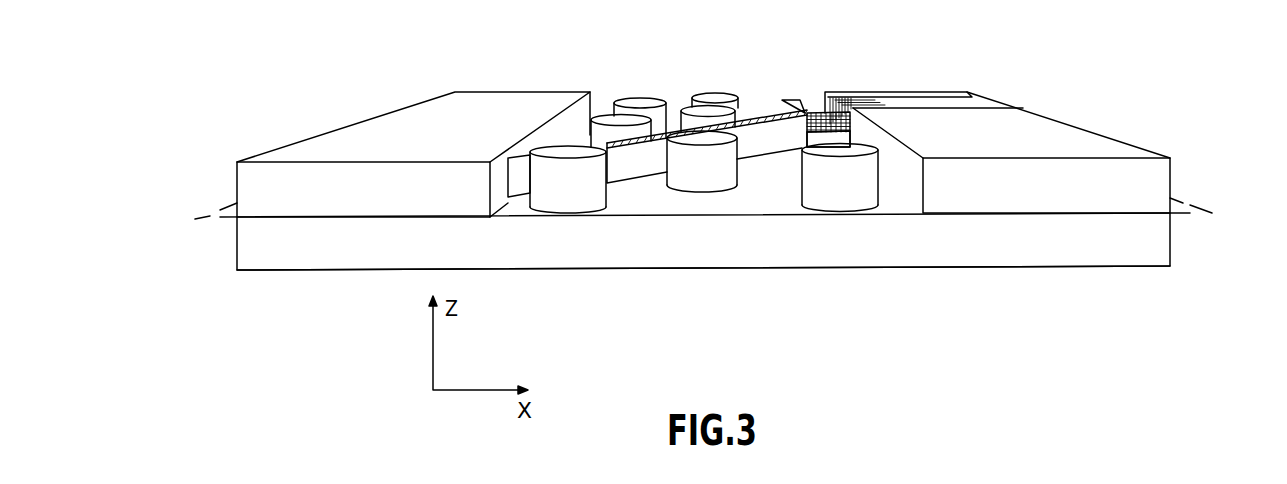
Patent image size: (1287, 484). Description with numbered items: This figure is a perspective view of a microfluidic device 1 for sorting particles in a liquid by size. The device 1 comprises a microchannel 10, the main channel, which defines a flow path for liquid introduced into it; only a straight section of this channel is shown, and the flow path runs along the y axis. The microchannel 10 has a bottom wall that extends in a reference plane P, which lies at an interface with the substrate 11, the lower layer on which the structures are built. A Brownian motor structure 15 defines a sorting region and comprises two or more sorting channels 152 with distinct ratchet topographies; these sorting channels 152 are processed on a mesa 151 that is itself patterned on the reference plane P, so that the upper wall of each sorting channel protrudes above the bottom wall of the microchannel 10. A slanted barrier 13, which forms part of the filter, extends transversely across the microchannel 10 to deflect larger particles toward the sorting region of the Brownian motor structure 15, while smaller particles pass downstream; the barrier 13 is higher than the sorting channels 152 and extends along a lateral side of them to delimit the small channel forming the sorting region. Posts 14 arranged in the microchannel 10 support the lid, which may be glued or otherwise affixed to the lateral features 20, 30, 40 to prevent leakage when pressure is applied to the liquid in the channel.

The microfluidic device 1 is at (855, 312).
The microchannel 10 is at (685, 207).
The substrate 11 is at (1083, 267).
The barrier 13 is at (638, 153).
The posts 14 is at (710, 93).
The Brownian motor structure 15 is at (808, 106).
The mesa 151 is at (840, 138).
The sorting channels 152 is at (811, 108).
The lateral feature 20 is at (432, 118).
The lateral feature 30 is at (952, 93).
The lateral feature 40 is at (1070, 143).
The reference plane P is at (209, 215).